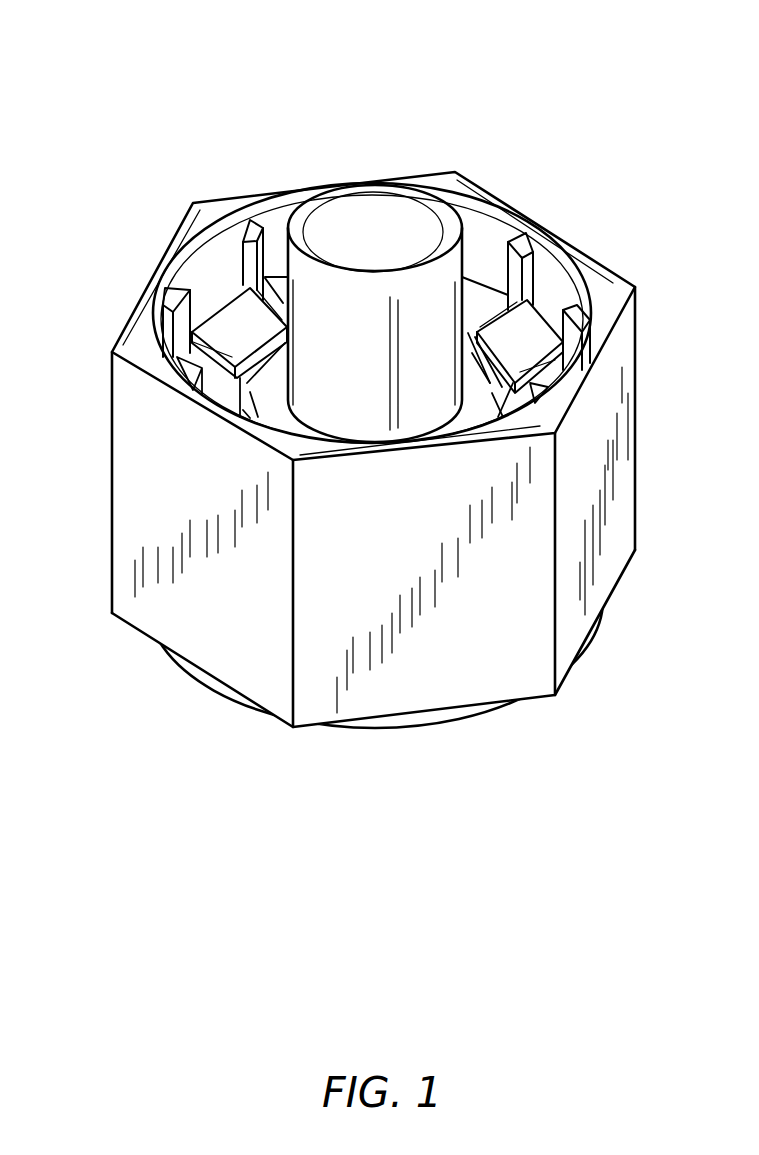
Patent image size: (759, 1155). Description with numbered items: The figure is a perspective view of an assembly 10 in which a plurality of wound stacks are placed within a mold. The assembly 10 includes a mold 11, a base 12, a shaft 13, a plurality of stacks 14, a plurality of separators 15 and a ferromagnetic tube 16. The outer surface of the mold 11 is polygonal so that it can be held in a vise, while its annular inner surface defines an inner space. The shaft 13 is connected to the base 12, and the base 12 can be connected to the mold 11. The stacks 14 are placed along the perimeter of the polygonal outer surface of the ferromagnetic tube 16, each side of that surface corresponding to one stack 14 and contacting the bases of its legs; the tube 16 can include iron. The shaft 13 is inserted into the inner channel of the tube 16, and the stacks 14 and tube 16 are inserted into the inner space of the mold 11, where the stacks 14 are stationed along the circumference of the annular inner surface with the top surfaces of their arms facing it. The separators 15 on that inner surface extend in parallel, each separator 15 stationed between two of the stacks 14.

The assembly 10 is at (138, 66).
The mold 11 is at (622, 527).
The base 12 is at (443, 722).
The shaft 13 is at (340, 210).
The stack 14 is at (540, 345).
The separator 15 is at (523, 300).
The ferromagnetic tube 16 is at (475, 387).